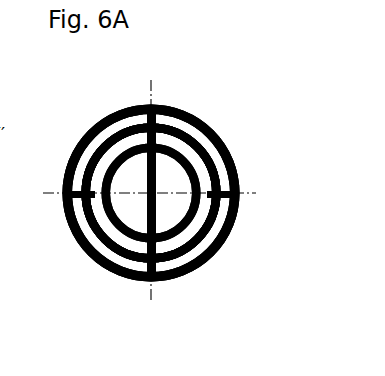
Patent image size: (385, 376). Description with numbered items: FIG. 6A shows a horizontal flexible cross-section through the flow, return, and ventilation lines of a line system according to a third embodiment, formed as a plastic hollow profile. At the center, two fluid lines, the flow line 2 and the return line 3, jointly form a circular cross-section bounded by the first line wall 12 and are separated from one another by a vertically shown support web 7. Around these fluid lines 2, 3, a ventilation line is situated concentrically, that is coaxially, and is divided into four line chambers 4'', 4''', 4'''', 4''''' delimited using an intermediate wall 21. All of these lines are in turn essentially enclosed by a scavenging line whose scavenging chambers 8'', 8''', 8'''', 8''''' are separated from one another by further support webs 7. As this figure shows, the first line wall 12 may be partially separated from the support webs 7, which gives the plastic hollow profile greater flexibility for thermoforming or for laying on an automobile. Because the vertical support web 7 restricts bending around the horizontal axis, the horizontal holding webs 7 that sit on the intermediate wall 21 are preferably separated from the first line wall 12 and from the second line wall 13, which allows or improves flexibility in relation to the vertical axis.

The flow line 2 is at (133, 178).
The return line 3 is at (168, 180).
The line chamber 4'' is at (110, 193).
The line chamber 4''' is at (109, 202).
The line chamber 4'''' is at (178, 202).
The line chamber 4''''' is at (177, 184).
The support web 7 is at (139, 206).
The scavenging chamber 8'' is at (109, 184).
The scavenging chamber 8''' is at (119, 218).
The scavenging chamber 8'''' is at (167, 218).
The scavenging chamber 8''''' is at (163, 181).
The first line wall 12 is at (130, 242).
The second line wall 13 is at (162, 282).
The intermediate wall 21 is at (230, 221).